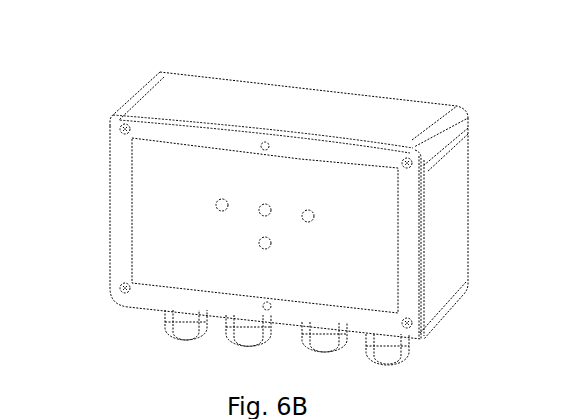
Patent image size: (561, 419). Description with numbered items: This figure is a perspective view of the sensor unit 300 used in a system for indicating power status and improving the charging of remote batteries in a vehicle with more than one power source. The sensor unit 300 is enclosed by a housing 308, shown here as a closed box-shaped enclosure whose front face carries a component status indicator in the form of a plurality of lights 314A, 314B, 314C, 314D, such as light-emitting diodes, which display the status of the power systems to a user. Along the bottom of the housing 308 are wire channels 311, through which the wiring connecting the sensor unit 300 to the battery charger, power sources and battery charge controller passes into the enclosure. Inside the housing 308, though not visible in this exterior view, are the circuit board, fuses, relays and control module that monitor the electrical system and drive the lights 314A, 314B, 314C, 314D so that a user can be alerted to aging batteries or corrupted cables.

The sensor unit 300 is at (298, 72).
The housing 308 is at (142, 311).
The wire channel 311 is at (408, 358).
The light 314A is at (216, 205).
The light 314B is at (267, 204).
The light 314C is at (313, 217).
The light 314D is at (265, 249).